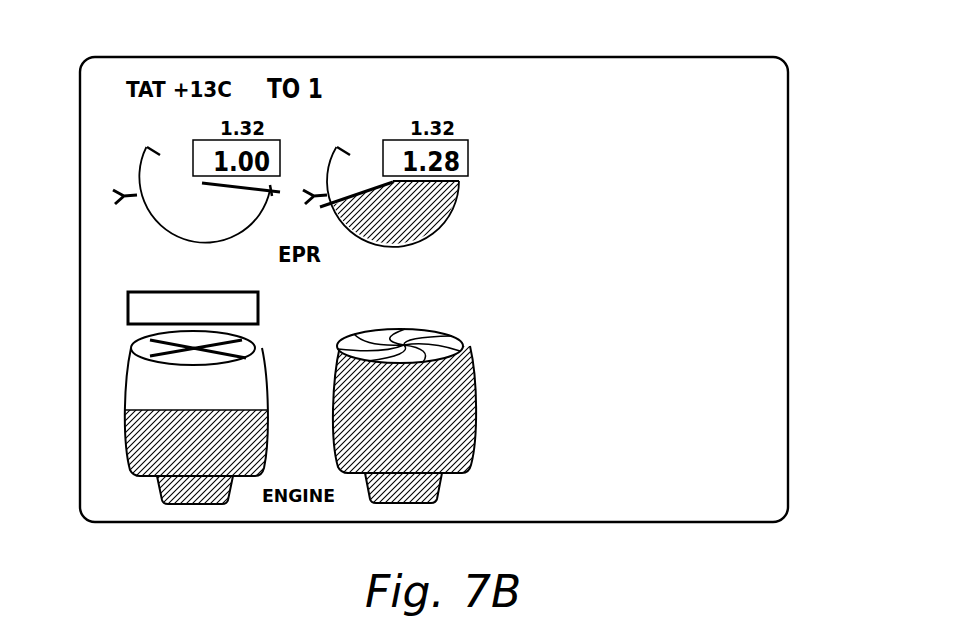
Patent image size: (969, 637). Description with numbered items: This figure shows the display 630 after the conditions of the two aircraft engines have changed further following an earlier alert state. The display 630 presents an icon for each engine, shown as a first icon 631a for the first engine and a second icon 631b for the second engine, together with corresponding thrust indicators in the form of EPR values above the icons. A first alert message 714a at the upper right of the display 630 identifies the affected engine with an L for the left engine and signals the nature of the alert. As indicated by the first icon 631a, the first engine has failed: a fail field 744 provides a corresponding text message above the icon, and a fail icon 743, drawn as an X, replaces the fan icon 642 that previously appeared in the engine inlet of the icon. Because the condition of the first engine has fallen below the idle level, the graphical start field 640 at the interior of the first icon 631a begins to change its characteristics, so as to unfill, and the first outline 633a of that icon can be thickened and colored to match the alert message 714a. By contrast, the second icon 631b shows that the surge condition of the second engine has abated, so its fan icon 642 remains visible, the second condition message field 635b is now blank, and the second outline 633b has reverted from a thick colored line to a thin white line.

The display 630 is at (80, 68).
The first alert message 714a is at (733, 80).
The fail field 744 is at (128, 295).
The fail icon 743 is at (248, 340).
The graphical start field 640 is at (172, 411).
The first icon 631a is at (125, 430).
The first outline 633a is at (128, 468).
The fan icon 642 is at (428, 332).
The second condition message field 635b is at (460, 397).
The second icon 631b is at (478, 428).
The second outline 633b is at (470, 455).